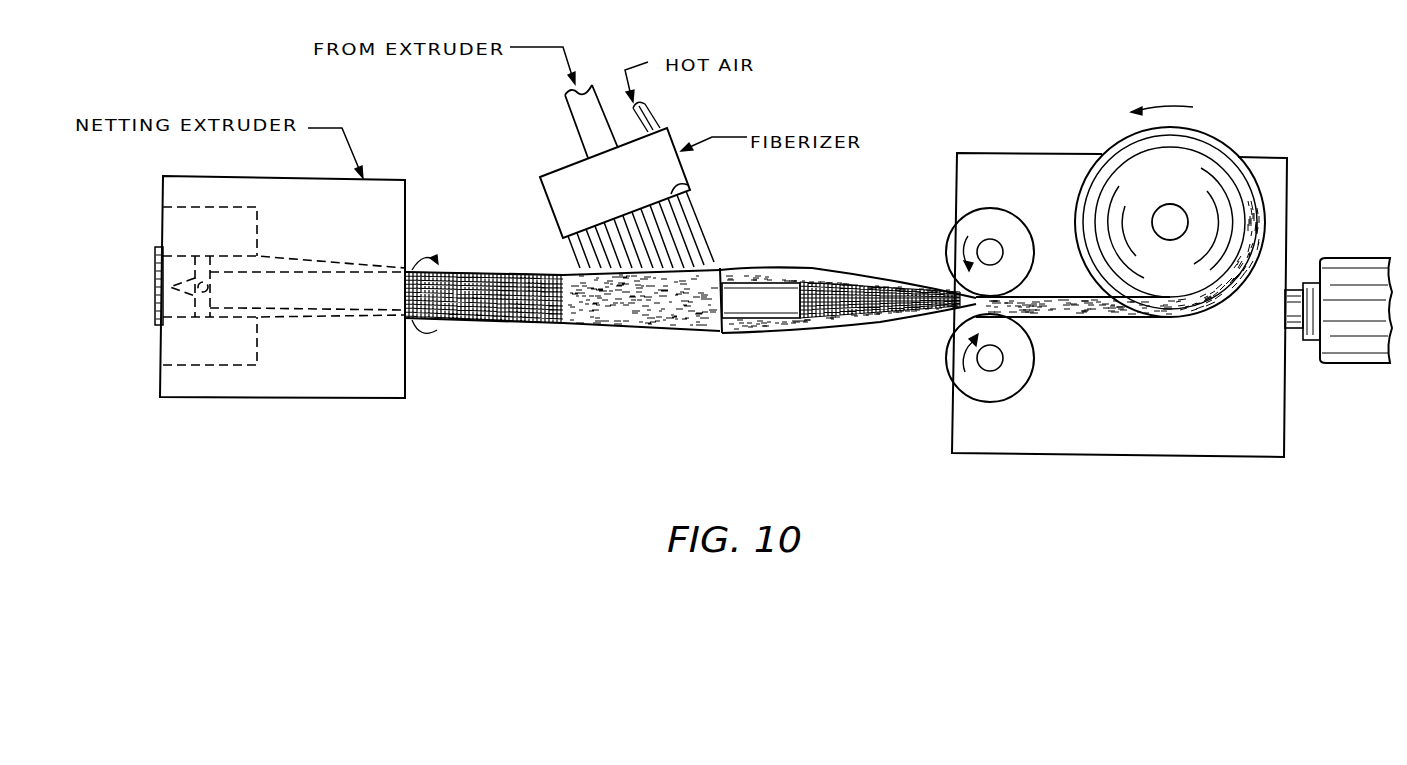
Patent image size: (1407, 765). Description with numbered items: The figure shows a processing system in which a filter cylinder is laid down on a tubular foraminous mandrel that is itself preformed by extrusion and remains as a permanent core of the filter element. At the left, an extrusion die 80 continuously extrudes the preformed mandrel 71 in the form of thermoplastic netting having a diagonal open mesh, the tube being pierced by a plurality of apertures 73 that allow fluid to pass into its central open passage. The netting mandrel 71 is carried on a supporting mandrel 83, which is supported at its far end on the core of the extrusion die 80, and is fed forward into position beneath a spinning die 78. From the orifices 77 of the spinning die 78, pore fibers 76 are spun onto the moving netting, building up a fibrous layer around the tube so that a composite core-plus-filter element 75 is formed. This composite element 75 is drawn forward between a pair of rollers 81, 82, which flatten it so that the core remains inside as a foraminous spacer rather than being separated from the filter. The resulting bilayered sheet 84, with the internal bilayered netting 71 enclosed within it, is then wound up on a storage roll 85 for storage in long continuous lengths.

The preformed mandrel 71 is at (482, 307).
The apertures 73 is at (520, 323).
The composite core-plus-filter element 75 is at (814, 264).
The pore fibers 76 is at (707, 234).
The orifices 77 is at (690, 182).
The spinning die 78 is at (543, 190).
The extrusion die 80 is at (412, 188).
The roller 81 is at (1013, 227).
The roller 82 is at (1020, 377).
The mandrel 83 is at (663, 305).
The bilayered sheet 84 is at (1125, 328).
The storage roll 85 is at (1230, 138).